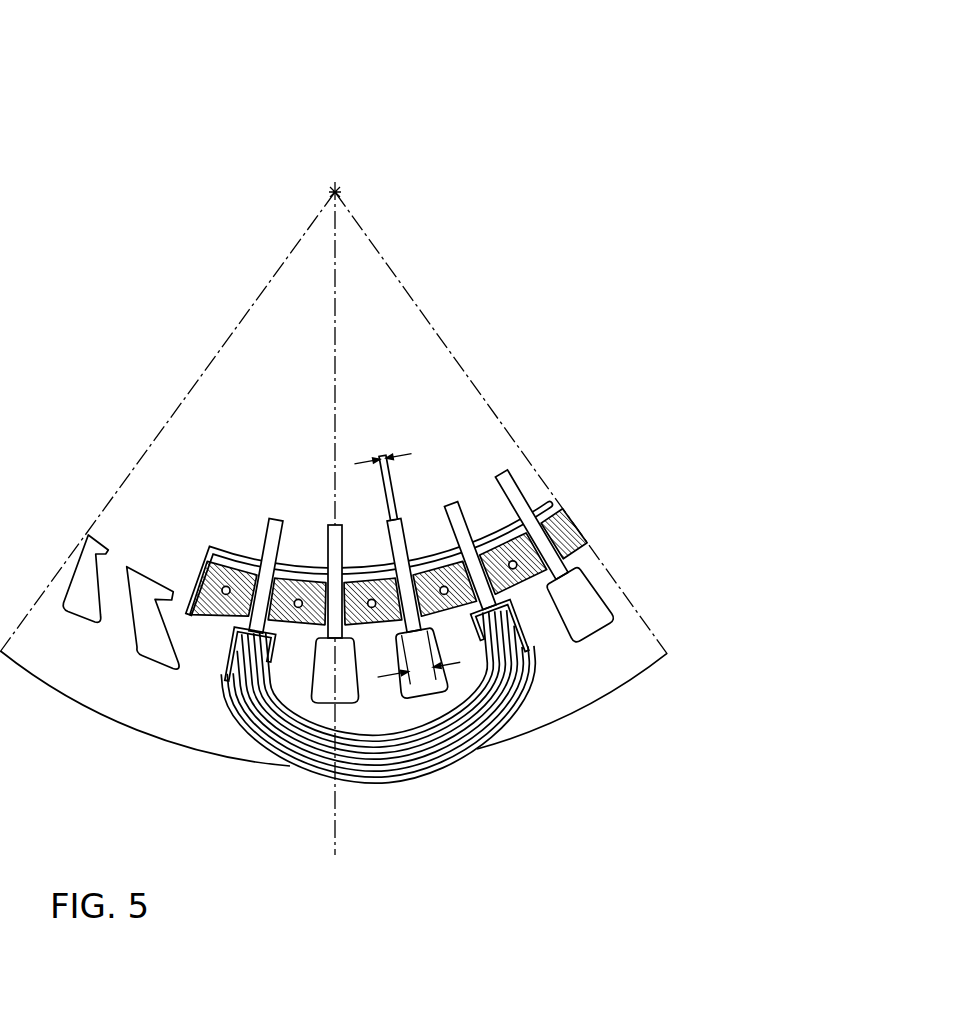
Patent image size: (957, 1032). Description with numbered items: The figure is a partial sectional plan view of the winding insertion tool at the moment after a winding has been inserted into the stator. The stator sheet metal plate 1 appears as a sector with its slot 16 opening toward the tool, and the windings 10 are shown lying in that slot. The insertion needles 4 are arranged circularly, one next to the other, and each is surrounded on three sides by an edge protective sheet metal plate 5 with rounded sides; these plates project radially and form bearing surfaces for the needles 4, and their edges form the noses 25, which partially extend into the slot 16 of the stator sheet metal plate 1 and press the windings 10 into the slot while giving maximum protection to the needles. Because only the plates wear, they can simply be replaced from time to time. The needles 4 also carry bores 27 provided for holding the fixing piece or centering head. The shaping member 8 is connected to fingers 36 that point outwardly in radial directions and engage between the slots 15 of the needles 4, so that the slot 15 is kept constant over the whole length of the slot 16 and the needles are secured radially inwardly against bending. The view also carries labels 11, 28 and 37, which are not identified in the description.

The stator sheet metal plate 1 is at (48, 672).
The insertion needles 4 is at (537, 497).
The edge protective sheet metal plate 5 is at (232, 563).
The shaping member 8 is at (377, 267).
The windings 10 is at (482, 748).
The clamp bracket 11 is at (520, 607).
The slots of the needles 15 is at (383, 455).
The slot 16 is at (162, 652).
The noses 25 is at (183, 607).
The bores 27 is at (298, 599).
The pole shoe 28 is at (418, 675).
The fingers 36 is at (448, 500).
The axis center 37 is at (335, 192).